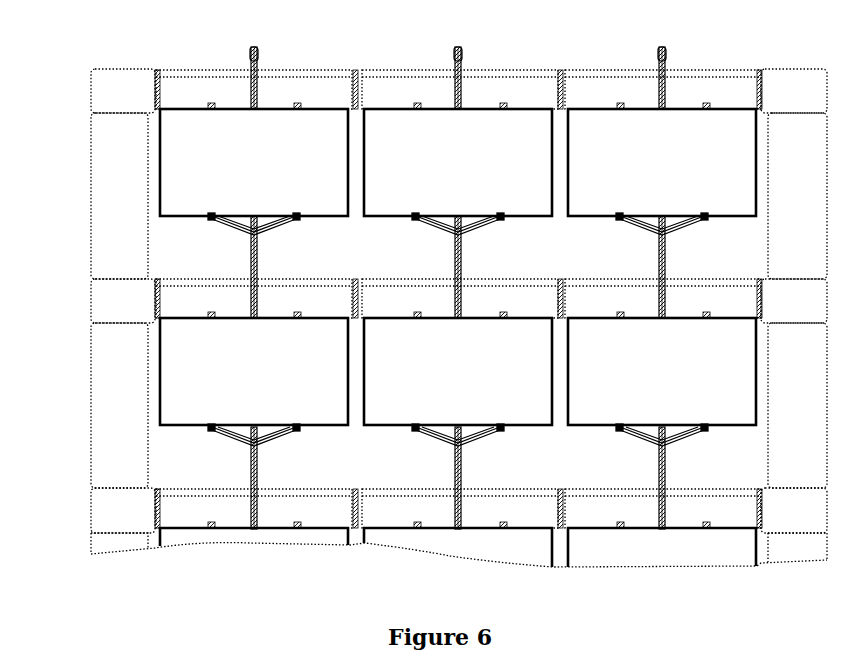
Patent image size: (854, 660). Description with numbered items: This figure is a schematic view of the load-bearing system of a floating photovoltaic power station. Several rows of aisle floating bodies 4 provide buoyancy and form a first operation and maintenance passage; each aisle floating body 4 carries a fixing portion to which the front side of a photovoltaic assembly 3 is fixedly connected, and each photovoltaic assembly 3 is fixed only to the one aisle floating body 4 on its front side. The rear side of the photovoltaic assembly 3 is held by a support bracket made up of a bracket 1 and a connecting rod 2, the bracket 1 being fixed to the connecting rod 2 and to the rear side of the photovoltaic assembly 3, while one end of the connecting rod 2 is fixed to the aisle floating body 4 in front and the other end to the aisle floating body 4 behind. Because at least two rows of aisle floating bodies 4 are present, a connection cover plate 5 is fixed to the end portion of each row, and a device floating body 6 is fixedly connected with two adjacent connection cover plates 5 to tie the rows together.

The bracket 1 is at (228, 220).
The connecting rod 2 is at (252, 248).
The photovoltaic assembly 3 is at (285, 140).
The aisle floating body 4 is at (192, 88).
The connection cover plate 5 is at (132, 88).
The device floating body 6 is at (115, 192).